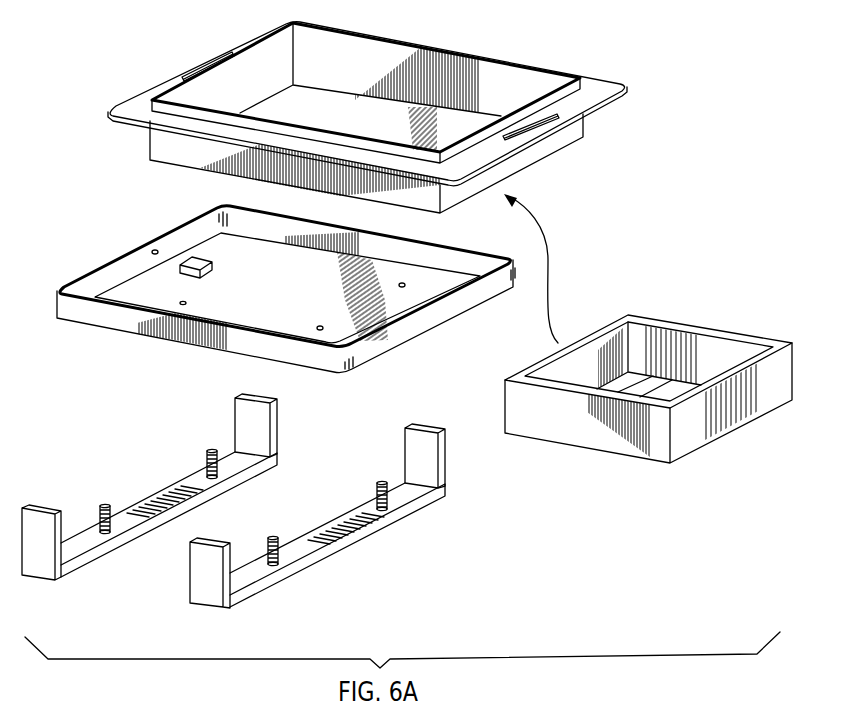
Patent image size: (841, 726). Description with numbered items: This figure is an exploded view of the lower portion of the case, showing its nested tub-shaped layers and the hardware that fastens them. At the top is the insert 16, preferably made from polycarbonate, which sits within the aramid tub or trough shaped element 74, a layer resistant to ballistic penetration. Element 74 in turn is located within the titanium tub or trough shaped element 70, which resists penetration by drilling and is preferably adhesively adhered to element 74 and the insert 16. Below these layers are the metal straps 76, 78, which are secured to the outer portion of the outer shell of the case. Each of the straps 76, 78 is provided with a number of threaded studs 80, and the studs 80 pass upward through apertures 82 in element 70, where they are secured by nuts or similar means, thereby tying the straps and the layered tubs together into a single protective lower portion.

The insert 16 is at (272, 30).
The tub or trough shaped element 70 is at (358, 361).
The tub or trough shaped element 74 is at (583, 432).
The metal strap 76 is at (48, 578).
The metal strap 78 is at (217, 607).
The threaded studs 80 is at (101, 506).
The apertures 82 is at (186, 303).